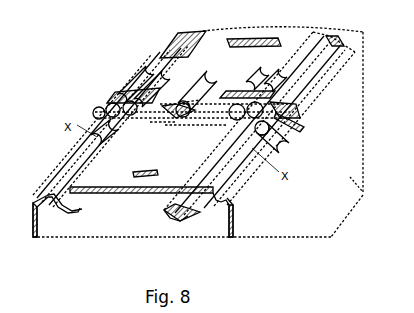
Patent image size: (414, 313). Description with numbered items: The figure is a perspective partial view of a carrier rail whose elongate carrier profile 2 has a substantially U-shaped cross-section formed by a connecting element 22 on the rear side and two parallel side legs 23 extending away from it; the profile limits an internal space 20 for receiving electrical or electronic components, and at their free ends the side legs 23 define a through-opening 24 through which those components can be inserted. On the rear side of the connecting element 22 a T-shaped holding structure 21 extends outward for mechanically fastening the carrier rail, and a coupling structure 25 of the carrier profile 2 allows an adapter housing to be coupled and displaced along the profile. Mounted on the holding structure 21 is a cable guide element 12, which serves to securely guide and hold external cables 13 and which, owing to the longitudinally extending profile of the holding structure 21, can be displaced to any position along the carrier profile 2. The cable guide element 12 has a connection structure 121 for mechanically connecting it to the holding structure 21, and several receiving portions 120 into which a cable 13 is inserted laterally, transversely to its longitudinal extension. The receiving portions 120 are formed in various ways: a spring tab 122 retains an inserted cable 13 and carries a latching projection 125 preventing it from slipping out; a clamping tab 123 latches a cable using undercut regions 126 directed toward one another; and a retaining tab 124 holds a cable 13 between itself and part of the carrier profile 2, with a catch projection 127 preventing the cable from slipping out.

The carrier profile 2 is at (354, 98).
The cable guide element 12 is at (90, 112).
The cable 13 is at (224, 70).
The internal space 20 is at (109, 213).
The holding structure 21 is at (85, 167).
The connecting element 22 is at (348, 45).
The side leg 23 is at (362, 190).
The through-opening 24 is at (182, 228).
The coupling structure 25 is at (53, 187).
The receiving portion 120 is at (148, 128).
The connection structure 121 is at (275, 150).
The spring tab 122 is at (128, 80).
The clamping tab 123 is at (187, 126).
The retaining tab 124 is at (296, 116).
The latching projection 125 is at (205, 118).
The undercut region 126 is at (188, 73).
The catch projection 127 is at (302, 133).